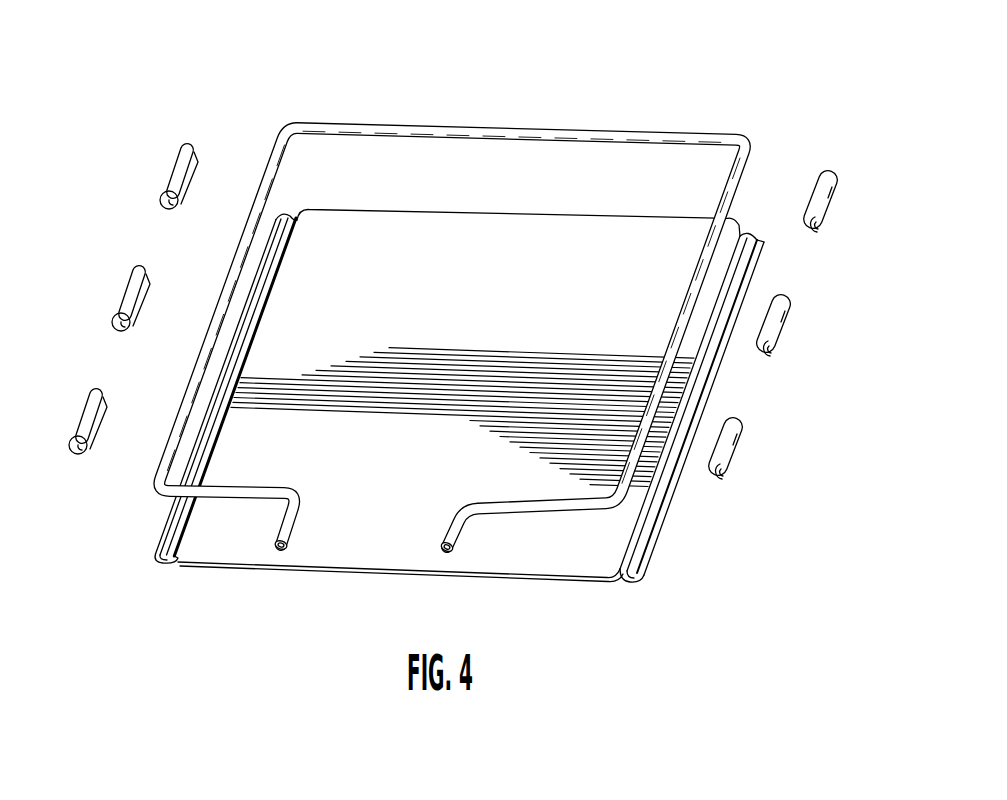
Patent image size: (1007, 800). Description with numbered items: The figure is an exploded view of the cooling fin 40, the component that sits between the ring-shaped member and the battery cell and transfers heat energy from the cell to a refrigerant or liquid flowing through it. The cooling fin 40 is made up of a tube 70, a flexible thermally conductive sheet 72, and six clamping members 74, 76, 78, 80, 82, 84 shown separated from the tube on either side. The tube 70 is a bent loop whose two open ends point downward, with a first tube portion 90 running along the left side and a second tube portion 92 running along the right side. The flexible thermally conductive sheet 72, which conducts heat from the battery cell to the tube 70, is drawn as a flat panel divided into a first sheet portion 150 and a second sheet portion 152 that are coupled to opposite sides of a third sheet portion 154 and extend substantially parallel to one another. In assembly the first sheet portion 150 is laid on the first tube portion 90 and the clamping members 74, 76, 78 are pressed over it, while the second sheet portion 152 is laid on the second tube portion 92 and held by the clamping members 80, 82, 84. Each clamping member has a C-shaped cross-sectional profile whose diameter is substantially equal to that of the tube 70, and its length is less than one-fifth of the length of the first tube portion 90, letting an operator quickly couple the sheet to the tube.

The cooling fin 40 is at (634, 58).
The tube 70 is at (536, 128).
The flexible thermally conductive sheet 72 is at (530, 225).
The clamping member 74 is at (85, 417).
The clamping member 76 is at (133, 297).
The clamping member 78 is at (177, 173).
The clamping member 80 is at (727, 461).
The clamping member 82 is at (776, 337).
The clamping member 84 is at (822, 212).
The first tube portion 90 is at (223, 273).
The second tube portion 92 is at (697, 263).
The first sheet portion 150 is at (167, 557).
The second sheet portion 152 is at (630, 580).
The third sheet portion 154 is at (358, 552).